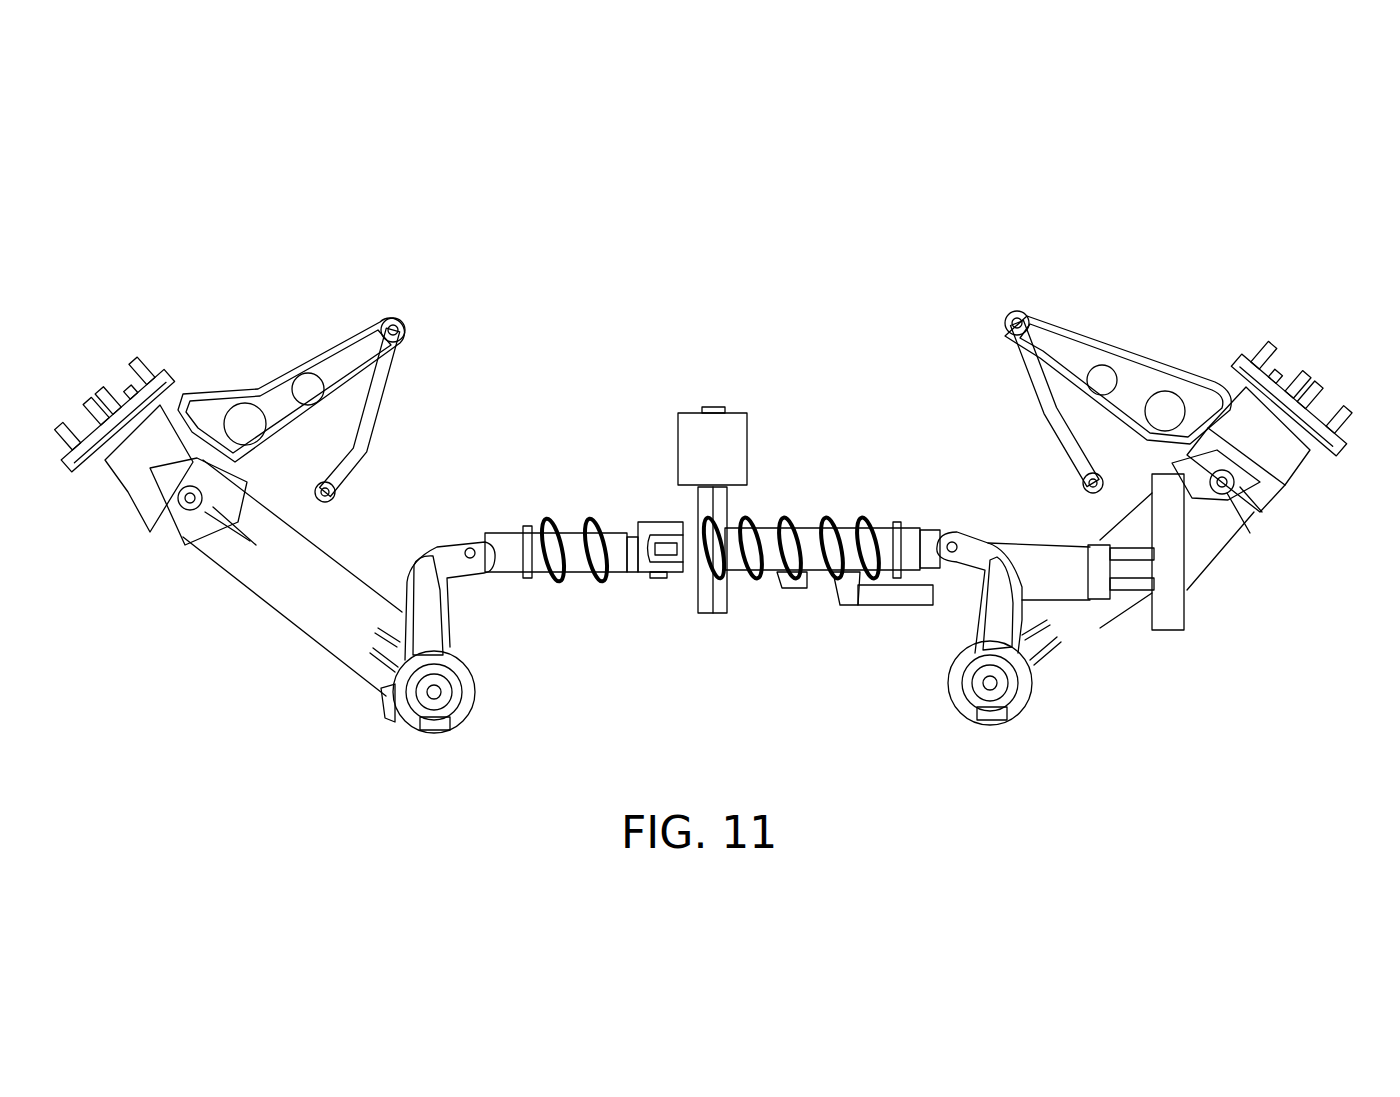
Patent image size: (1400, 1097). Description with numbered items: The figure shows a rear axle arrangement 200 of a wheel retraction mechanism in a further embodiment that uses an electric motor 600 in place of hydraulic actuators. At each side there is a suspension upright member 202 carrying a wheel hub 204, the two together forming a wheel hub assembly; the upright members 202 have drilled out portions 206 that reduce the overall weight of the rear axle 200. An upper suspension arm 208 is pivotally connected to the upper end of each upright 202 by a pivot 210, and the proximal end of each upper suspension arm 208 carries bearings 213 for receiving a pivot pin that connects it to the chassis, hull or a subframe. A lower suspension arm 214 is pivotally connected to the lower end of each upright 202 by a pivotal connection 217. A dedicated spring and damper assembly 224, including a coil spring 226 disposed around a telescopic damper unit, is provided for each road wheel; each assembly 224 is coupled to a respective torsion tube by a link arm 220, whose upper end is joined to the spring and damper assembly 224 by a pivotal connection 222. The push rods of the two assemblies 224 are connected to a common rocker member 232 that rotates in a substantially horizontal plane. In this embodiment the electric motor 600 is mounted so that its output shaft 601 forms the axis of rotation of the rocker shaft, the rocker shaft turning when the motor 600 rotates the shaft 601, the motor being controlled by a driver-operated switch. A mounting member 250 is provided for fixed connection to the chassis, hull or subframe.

The rear axle arrangement 200 is at (666, 352).
The suspension upright member 202 is at (356, 335).
The wheel hub 204 is at (88, 368).
The drilled out portions 206 is at (298, 382).
The upper suspension arm 208 is at (370, 431).
The pivot 210 is at (398, 324).
The bearings 213 is at (337, 490).
The lower suspension arm 214 is at (332, 630).
The pivotal connection 217 is at (178, 537).
The link arm 220 is at (462, 598).
The pivotal connection 222 is at (470, 540).
The spring and damper assembly 224 is at (615, 497).
The coil spring 226 is at (623, 582).
The rocker member 232 is at (754, 600).
The mounting member 250 is at (1178, 632).
The electric motor 600 is at (745, 445).
The output shaft 601 is at (725, 495).